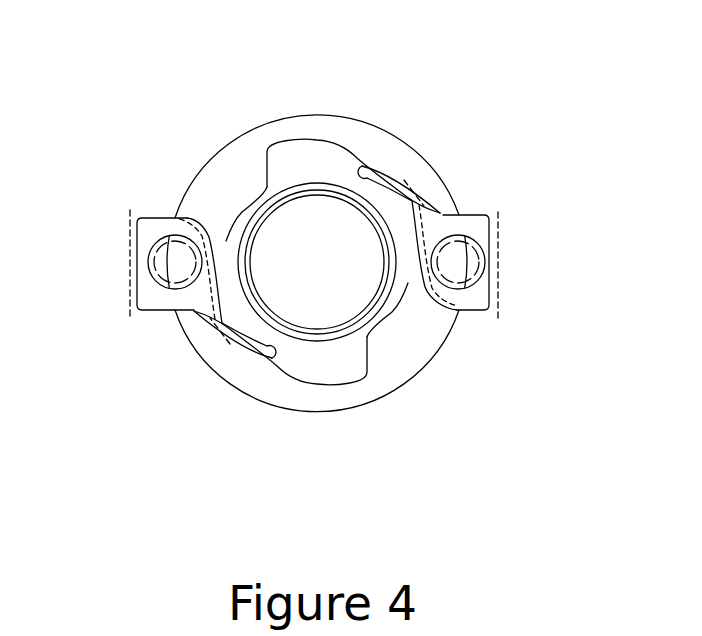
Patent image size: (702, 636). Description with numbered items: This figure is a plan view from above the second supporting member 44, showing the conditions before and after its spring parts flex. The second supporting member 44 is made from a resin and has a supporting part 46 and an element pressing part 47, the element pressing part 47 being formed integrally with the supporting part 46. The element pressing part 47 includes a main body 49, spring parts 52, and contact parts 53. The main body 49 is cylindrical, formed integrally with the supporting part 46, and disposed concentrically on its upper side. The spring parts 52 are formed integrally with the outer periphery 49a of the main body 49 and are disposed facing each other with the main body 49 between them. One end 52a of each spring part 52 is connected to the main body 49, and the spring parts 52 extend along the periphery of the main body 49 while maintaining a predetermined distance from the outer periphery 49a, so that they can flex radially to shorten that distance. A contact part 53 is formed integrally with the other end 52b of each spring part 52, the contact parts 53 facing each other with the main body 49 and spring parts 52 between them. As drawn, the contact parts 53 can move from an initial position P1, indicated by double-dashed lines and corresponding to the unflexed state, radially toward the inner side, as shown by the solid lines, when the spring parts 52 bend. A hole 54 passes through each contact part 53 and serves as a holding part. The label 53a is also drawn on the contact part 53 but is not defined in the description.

The second supporting member 44 is at (344, 117).
The supporting part 46 is at (420, 380).
The element pressing part 47 is at (250, 187).
The main body 49 is at (385, 313).
The outer periphery of the main body 49a is at (353, 182).
The spring part 52 is at (403, 195).
The one end of the spring part 52a is at (366, 165).
The other end of the spring part 52b is at (417, 204).
The contact part 53 is at (473, 230).
The lug side face 53a is at (495, 293).
The hole 54 is at (468, 267).
The initial position P1 is at (498, 212).